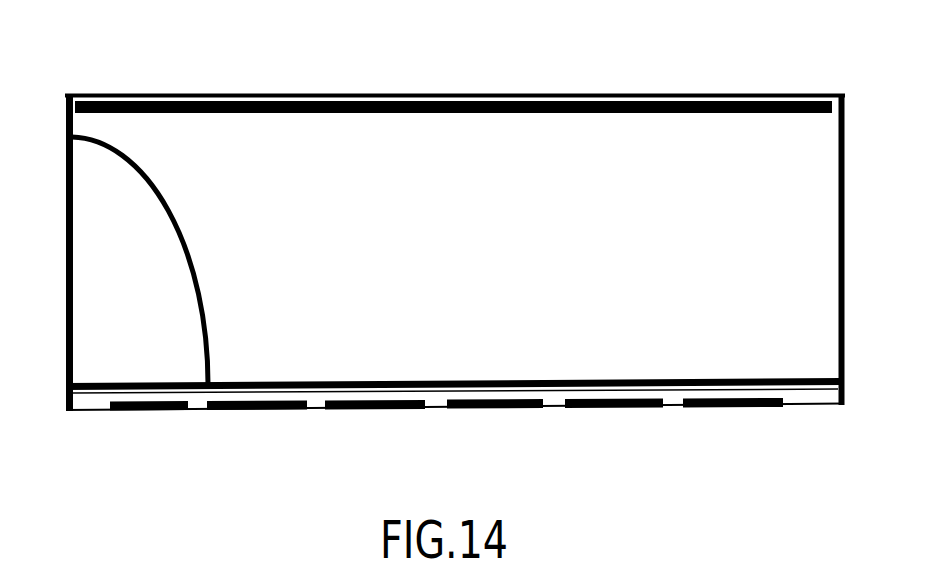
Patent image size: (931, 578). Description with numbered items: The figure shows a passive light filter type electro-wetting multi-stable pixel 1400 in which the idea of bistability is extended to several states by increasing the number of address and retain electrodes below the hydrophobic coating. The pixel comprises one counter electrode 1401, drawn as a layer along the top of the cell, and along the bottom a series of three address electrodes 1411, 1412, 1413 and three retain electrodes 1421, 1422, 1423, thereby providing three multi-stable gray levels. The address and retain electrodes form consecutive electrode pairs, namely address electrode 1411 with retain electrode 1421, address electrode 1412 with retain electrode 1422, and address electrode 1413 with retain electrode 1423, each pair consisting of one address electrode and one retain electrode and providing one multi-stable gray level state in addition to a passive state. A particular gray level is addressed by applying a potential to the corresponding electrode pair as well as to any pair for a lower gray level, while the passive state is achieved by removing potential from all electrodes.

The multi-stable pixel 1400 is at (537, 75).
The counter electrode 1401 is at (468, 112).
The address electrode 1411 is at (148, 411).
The retain electrode 1421 is at (278, 410).
The address electrode 1412 is at (398, 410).
The retain electrode 1422 is at (527, 410).
The address electrode 1413 is at (648, 410).
The retain electrode 1423 is at (757, 408).